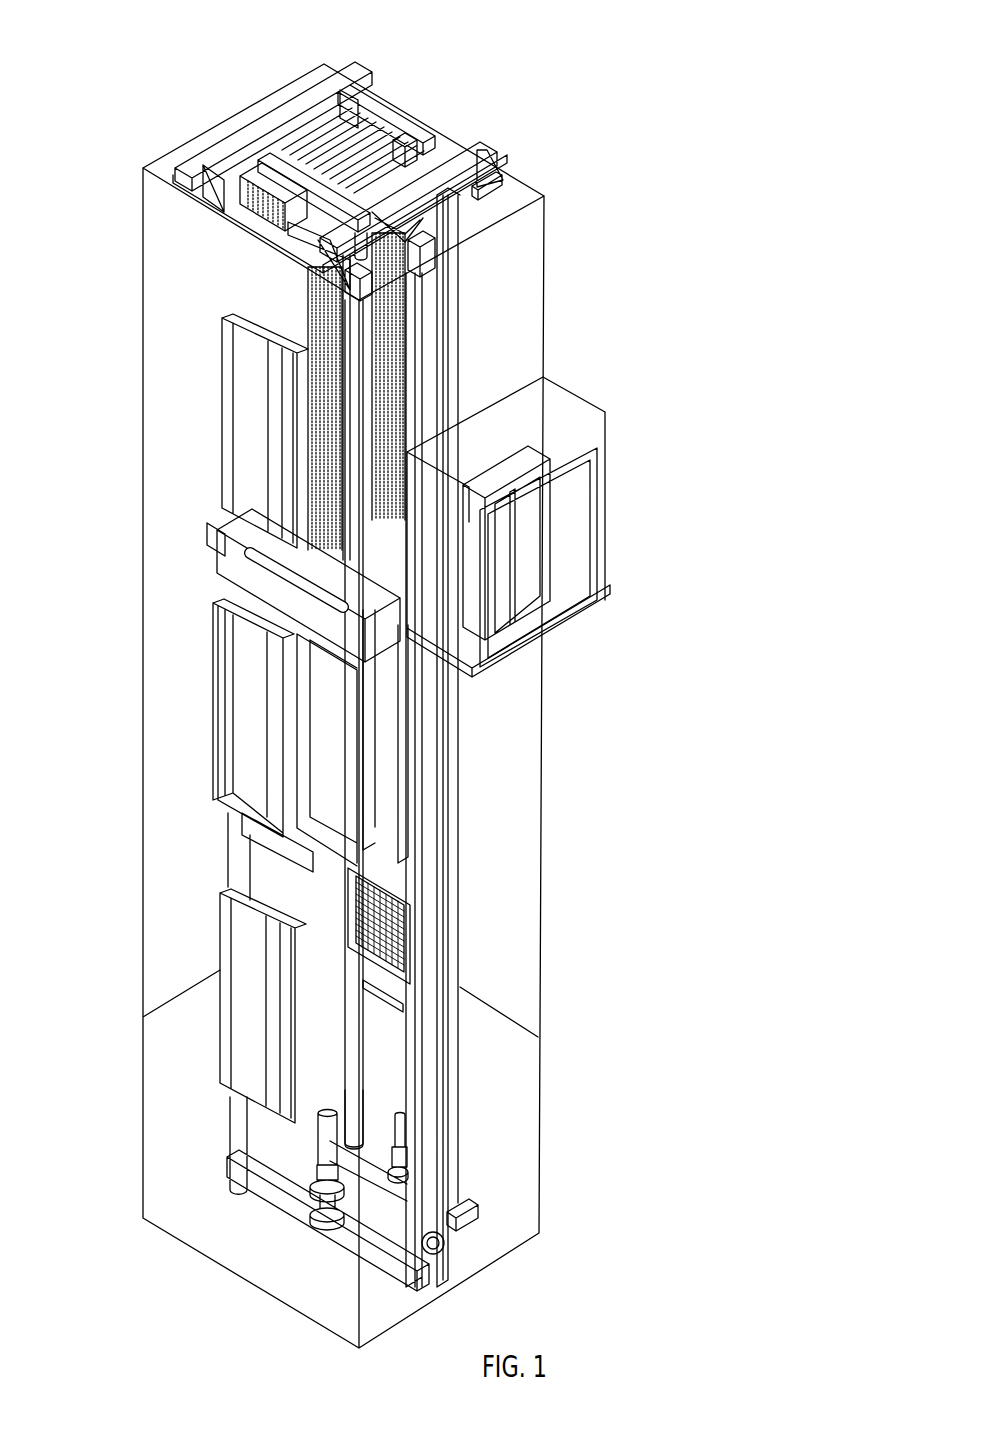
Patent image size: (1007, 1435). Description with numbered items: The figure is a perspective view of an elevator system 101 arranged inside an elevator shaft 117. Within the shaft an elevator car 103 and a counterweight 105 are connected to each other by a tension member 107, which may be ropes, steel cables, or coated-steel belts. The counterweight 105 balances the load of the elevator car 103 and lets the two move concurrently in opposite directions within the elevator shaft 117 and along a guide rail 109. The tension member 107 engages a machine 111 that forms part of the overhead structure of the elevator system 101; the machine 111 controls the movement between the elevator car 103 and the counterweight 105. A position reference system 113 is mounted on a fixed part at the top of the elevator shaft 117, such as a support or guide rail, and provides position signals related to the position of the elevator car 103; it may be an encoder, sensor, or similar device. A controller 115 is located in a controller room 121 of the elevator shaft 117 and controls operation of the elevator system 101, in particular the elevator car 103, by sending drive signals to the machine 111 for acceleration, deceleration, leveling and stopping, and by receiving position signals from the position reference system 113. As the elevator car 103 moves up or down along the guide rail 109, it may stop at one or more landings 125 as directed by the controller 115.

The elevator system 101 is at (565, 83).
The elevator car 103 is at (340, 745).
The counterweight 105 is at (393, 940).
The tension member 107 is at (343, 417).
The guide rail 109 is at (430, 860).
The machine 111 is at (255, 170).
The position reference system 113 is at (430, 258).
The controller 115 is at (553, 548).
The elevator shaft 117 is at (197, 865).
The controller room 121 is at (557, 511).
The landings 125 is at (222, 413).